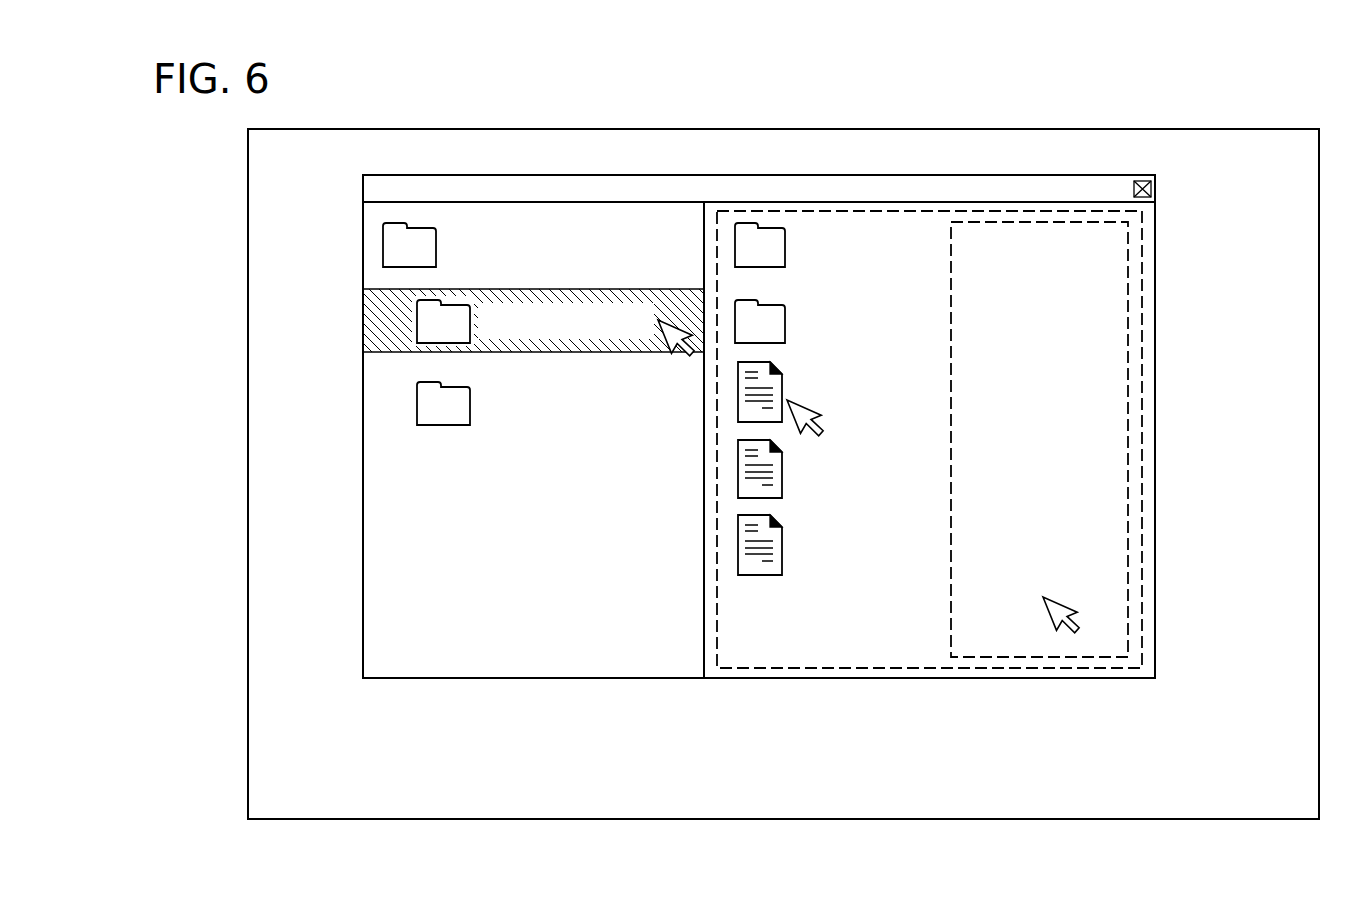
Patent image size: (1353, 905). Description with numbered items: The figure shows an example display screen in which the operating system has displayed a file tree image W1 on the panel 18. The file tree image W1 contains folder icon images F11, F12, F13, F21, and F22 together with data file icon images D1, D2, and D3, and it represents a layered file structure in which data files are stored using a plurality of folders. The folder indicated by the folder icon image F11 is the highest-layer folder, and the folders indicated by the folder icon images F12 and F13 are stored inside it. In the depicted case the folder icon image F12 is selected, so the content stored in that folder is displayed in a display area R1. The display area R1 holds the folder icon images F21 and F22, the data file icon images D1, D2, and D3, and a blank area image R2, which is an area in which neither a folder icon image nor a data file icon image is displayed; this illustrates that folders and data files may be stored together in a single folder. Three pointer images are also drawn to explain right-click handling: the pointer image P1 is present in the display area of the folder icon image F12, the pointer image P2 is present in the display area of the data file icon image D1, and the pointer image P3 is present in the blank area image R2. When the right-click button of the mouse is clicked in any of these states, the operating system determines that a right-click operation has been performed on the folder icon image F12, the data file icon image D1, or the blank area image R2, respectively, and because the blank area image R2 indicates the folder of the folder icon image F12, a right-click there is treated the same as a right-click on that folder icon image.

The panel 18 is at (1265, 129).
The file tree image W1 is at (1102, 173).
The folder icon image F11 is at (383, 240).
The folder icon image F12 is at (417, 318).
The folder icon image F13 is at (417, 400).
The folder icon image F21 is at (935, 245).
The folder icon image F22 is at (935, 320).
The data file icon image D1 is at (935, 395).
The data file icon image D2 is at (935, 470).
The data file icon image D3 is at (935, 545).
The pointer image P1 is at (670, 348).
The pointer image P2 is at (797, 427).
The pointer image P3 is at (1062, 627).
The display area R1 is at (890, 668).
The blank area image R2 is at (1012, 658).